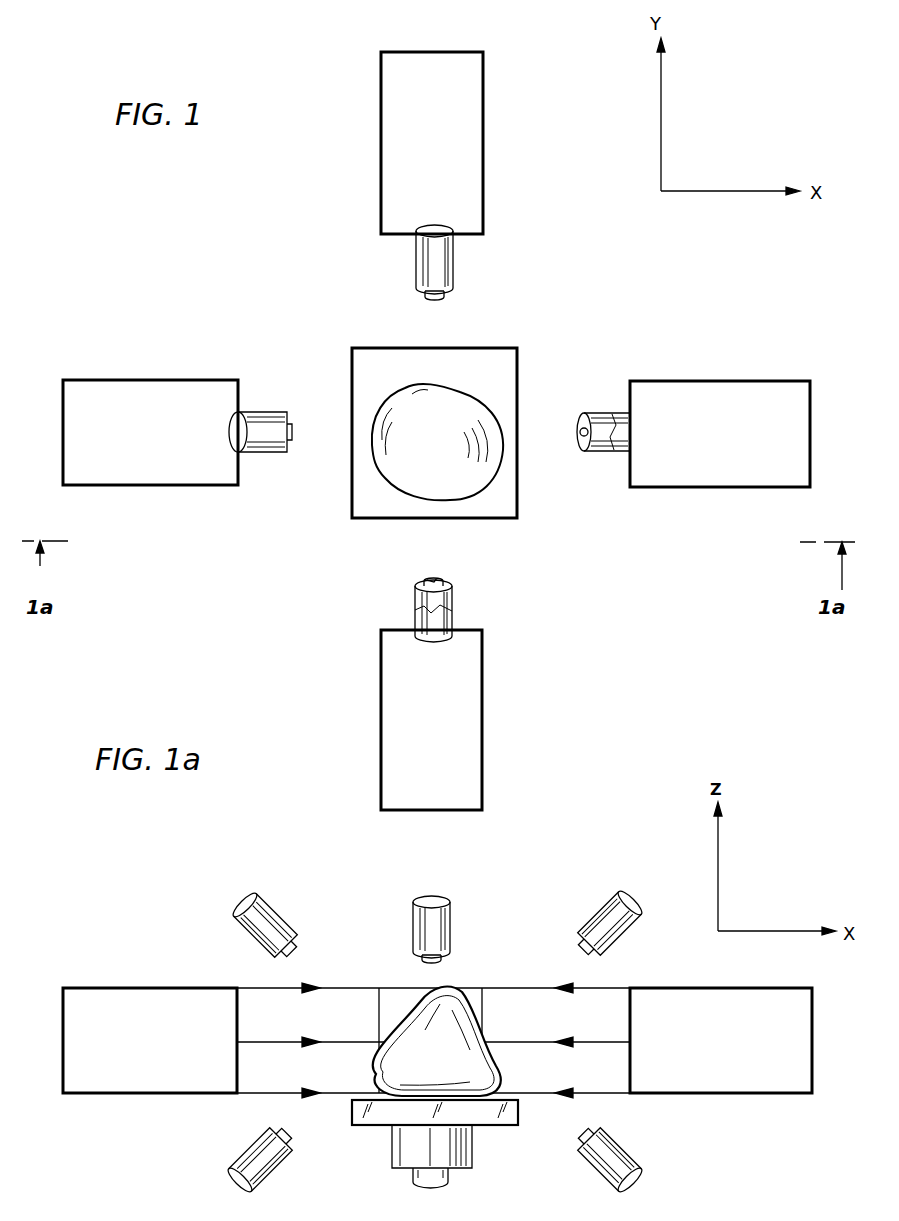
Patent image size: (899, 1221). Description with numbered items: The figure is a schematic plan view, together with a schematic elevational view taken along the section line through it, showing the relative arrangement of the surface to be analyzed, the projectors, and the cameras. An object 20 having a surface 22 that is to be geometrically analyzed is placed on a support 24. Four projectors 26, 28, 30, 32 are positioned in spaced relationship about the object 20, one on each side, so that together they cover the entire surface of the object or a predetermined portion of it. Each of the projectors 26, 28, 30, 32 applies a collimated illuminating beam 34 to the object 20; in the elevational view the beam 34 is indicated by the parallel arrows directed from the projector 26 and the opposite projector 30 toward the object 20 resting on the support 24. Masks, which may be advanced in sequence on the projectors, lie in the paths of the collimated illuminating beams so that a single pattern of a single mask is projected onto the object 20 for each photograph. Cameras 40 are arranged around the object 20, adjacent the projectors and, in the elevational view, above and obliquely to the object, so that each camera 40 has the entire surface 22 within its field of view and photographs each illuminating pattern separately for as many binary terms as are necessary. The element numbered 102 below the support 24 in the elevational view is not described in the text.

In FIG. 1, the object 20 is at (447, 455).
In FIG. 1a, the object 20 is at (449, 1073).
In FIG. 1, the surface 22 is at (467, 478).
In FIG. 1a, the surface 22 is at (470, 1027).
In FIG. 1, the support 24 is at (492, 367).
In FIG. 1a, the support 24 is at (362, 1118).
In FIG. 1, the projector 26 is at (160, 474).
In FIG. 1a, the projector 26 is at (130, 1082).
In FIG. 1, the projector 28 is at (472, 182).
In FIG. 1a, the projector 28 is at (396, 995).
In FIG. 1, the projector 30 is at (683, 476).
In FIG. 1a, the projector 30 is at (775, 997).
In FIG. 1, the projector 32 is at (471, 738).
In FIG. 1a, the collimated illuminating beam 34 is at (335, 990).
In FIG. 1, the camera 40 is at (441, 262).
In FIG. 1a, the camera 40 is at (232, 910).
In FIG. 1a, the rotary support 102 is at (460, 1150).